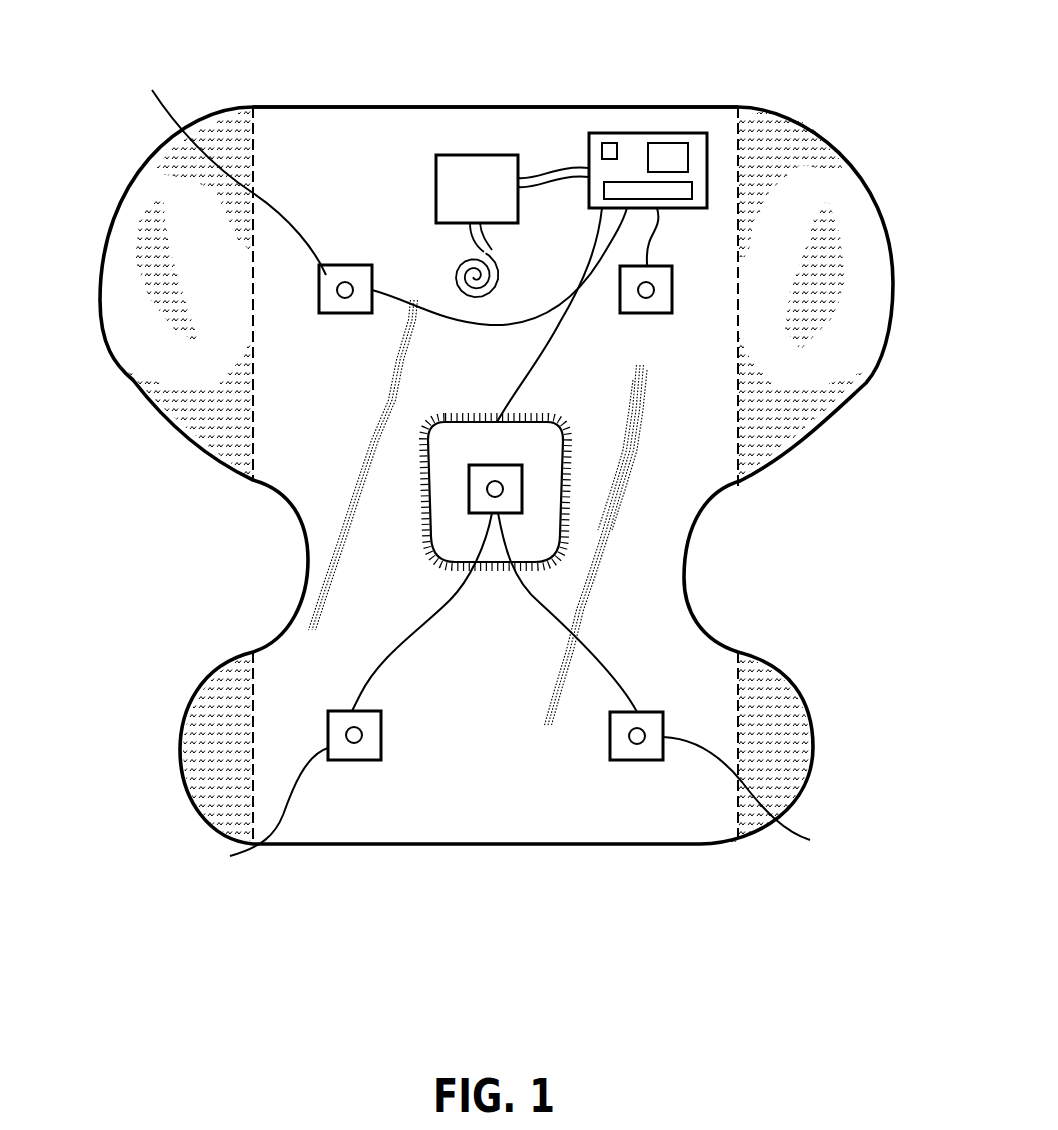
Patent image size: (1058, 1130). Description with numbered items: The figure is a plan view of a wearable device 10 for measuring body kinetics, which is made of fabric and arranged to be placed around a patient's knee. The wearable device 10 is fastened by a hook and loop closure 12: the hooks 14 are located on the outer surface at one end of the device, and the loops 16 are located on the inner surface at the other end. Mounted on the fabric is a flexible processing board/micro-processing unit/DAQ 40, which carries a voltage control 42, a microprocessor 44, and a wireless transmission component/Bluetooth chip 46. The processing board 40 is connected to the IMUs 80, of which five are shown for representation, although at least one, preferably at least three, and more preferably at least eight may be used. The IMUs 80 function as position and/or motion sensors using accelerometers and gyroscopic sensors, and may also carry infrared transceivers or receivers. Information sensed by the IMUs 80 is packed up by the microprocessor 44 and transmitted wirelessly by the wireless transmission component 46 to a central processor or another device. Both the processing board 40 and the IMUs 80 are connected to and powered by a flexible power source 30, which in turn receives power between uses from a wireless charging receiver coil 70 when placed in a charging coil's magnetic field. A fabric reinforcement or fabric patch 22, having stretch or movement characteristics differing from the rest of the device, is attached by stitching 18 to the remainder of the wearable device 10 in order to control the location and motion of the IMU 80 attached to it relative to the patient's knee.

The wearable device 10 is at (287, 80).
The hook and loop closure 12 is at (112, 217).
The hooks 14 is at (150, 298).
The loops 16 is at (828, 282).
The stitching 18 is at (563, 483).
The fabric reinforcement 22 is at (532, 453).
The flexible power source 30 is at (452, 168).
The flexible processing board/micro-processing unit/DAQ 40 is at (644, 133).
The voltage control 42 is at (603, 143).
The microprocessor 44 is at (693, 190).
The wireless transmission component/Bluetooth chip 46 is at (670, 143).
The wireless charging receiver coil 70 is at (502, 287).
The IMU 80 is at (722, 582).